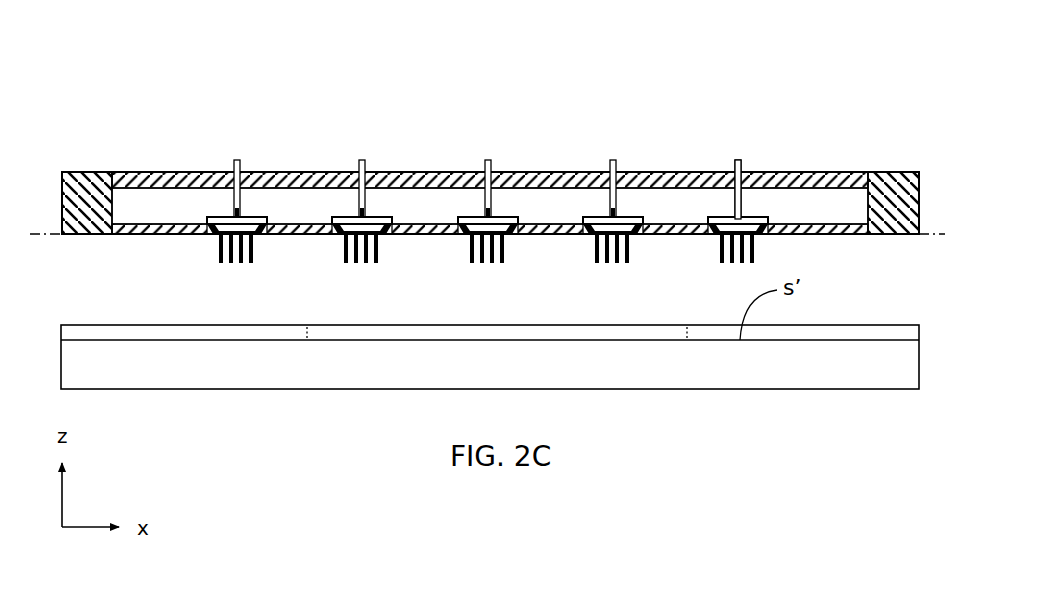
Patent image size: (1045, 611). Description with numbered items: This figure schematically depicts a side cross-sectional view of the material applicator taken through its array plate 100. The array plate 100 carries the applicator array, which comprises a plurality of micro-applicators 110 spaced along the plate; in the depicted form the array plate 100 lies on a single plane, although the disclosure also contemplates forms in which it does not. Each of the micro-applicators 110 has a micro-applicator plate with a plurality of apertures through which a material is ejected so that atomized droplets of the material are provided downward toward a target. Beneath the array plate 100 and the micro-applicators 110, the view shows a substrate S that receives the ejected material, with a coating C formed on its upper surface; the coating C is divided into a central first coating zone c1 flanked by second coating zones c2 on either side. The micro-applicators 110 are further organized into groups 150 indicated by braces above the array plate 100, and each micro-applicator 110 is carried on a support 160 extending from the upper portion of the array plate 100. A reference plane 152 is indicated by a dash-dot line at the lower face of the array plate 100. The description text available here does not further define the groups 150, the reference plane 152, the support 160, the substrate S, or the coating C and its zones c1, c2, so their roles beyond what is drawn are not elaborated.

The array plate 100 is at (858, 243).
The micro-applicators 110 is at (204, 256).
The group of emitter elements 150 is at (777, 150).
The reference plane 152 is at (33, 233).
The support post 160 is at (742, 163).
The substrate S is at (497, 377).
The coating layer C is at (117, 332).
The first coating zone c1 is at (563, 333).
The second coating zone c2 is at (165, 333).